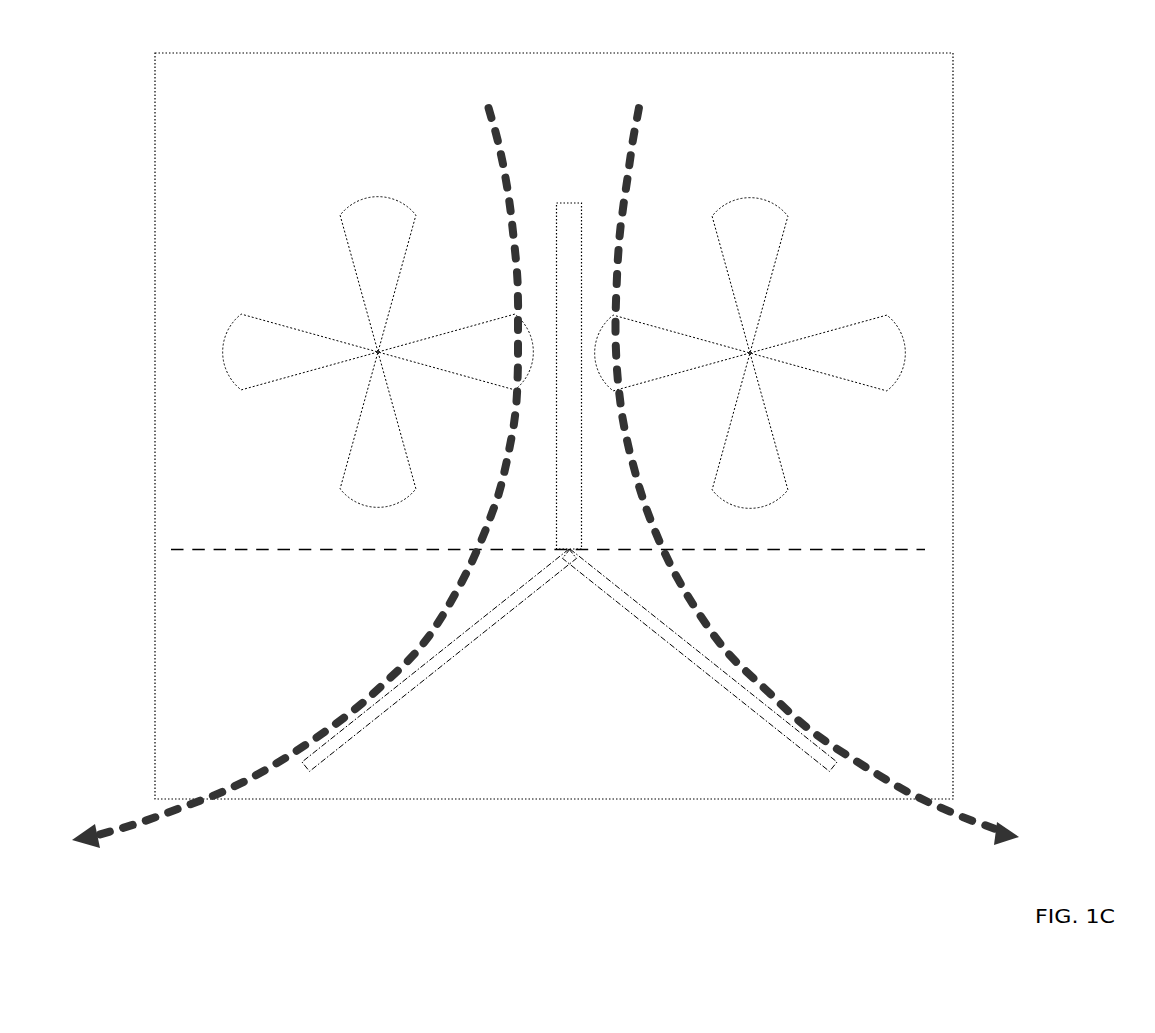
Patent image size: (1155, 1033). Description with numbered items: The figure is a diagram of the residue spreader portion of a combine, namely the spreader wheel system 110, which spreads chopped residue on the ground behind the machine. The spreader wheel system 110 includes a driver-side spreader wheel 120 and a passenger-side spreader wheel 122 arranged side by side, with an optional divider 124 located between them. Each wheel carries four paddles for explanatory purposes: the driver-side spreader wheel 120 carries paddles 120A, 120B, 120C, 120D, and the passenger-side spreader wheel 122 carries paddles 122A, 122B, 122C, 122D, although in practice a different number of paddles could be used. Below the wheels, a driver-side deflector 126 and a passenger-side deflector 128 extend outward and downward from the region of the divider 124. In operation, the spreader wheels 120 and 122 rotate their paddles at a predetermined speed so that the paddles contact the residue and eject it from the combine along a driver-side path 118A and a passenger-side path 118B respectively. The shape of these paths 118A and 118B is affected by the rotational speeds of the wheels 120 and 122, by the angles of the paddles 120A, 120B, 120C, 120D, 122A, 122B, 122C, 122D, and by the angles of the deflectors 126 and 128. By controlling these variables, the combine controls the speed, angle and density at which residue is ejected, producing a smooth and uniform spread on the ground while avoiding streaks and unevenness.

The spreader wheel system 110 is at (588, 30).
The residue ejection path 118A is at (287, 478).
The residue ejection path 118B is at (848, 476).
The driver-side spreader wheel 120 is at (377, 312).
The paddle 120A is at (378, 274).
The paddle 120B is at (455, 352).
The paddle 120C is at (378, 429).
The paddle 120D is at (300, 352).
The passenger-side spreader wheel 122 is at (750, 312).
The paddle 122A is at (750, 275).
The paddle 122B is at (827, 353).
The paddle 122C is at (750, 430).
The paddle 122D is at (672, 353).
The divider 124 is at (572, 201).
The driver-side deflector 126 is at (425, 685).
The passenger-side deflector 128 is at (715, 692).